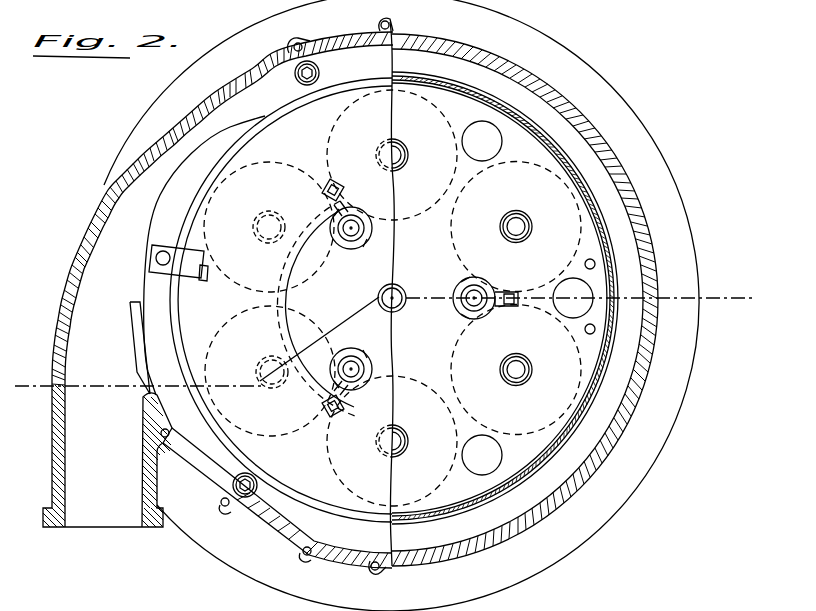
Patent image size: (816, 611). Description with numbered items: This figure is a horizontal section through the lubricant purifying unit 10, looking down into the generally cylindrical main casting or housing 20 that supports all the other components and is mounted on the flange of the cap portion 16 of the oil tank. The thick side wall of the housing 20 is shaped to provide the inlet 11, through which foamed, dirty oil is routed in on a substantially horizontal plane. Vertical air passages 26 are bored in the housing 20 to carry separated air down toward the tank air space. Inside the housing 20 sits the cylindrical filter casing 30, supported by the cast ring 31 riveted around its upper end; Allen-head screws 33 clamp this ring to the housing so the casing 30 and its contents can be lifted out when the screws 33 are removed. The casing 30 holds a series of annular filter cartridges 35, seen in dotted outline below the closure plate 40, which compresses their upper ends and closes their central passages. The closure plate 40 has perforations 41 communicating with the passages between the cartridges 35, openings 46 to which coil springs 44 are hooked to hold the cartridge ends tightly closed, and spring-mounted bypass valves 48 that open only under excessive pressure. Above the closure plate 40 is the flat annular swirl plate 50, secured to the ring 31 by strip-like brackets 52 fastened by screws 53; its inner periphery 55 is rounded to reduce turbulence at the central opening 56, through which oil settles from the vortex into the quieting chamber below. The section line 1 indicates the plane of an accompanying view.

The section line 1- 1 is at (22, 430).
The lubricant purifying unit 10 is at (616, 161).
The inlet 11 is at (117, 527).
The cap portion 16 is at (529, 576).
The main casting or housing 20 is at (543, 506).
The vertical air passages 26 is at (383, 24).
The filter casing 30 is at (304, 500).
The cast ring 31 is at (336, 548).
The Allen-head screws 33 is at (300, 80).
The filter cartridges 35 is at (332, 144).
The closure plate 40 is at (556, 470).
The perforations 41 is at (498, 128).
The coil springs 44 is at (366, 234).
The opening 46 is at (326, 199).
The bypass valves 48 is at (405, 156).
The swirl plate 50 is at (262, 348).
The strip-like brackets 52 is at (198, 275).
The screws 53 is at (166, 250).
The inner periphery 55 is at (288, 314).
The opening 56 is at (380, 295).